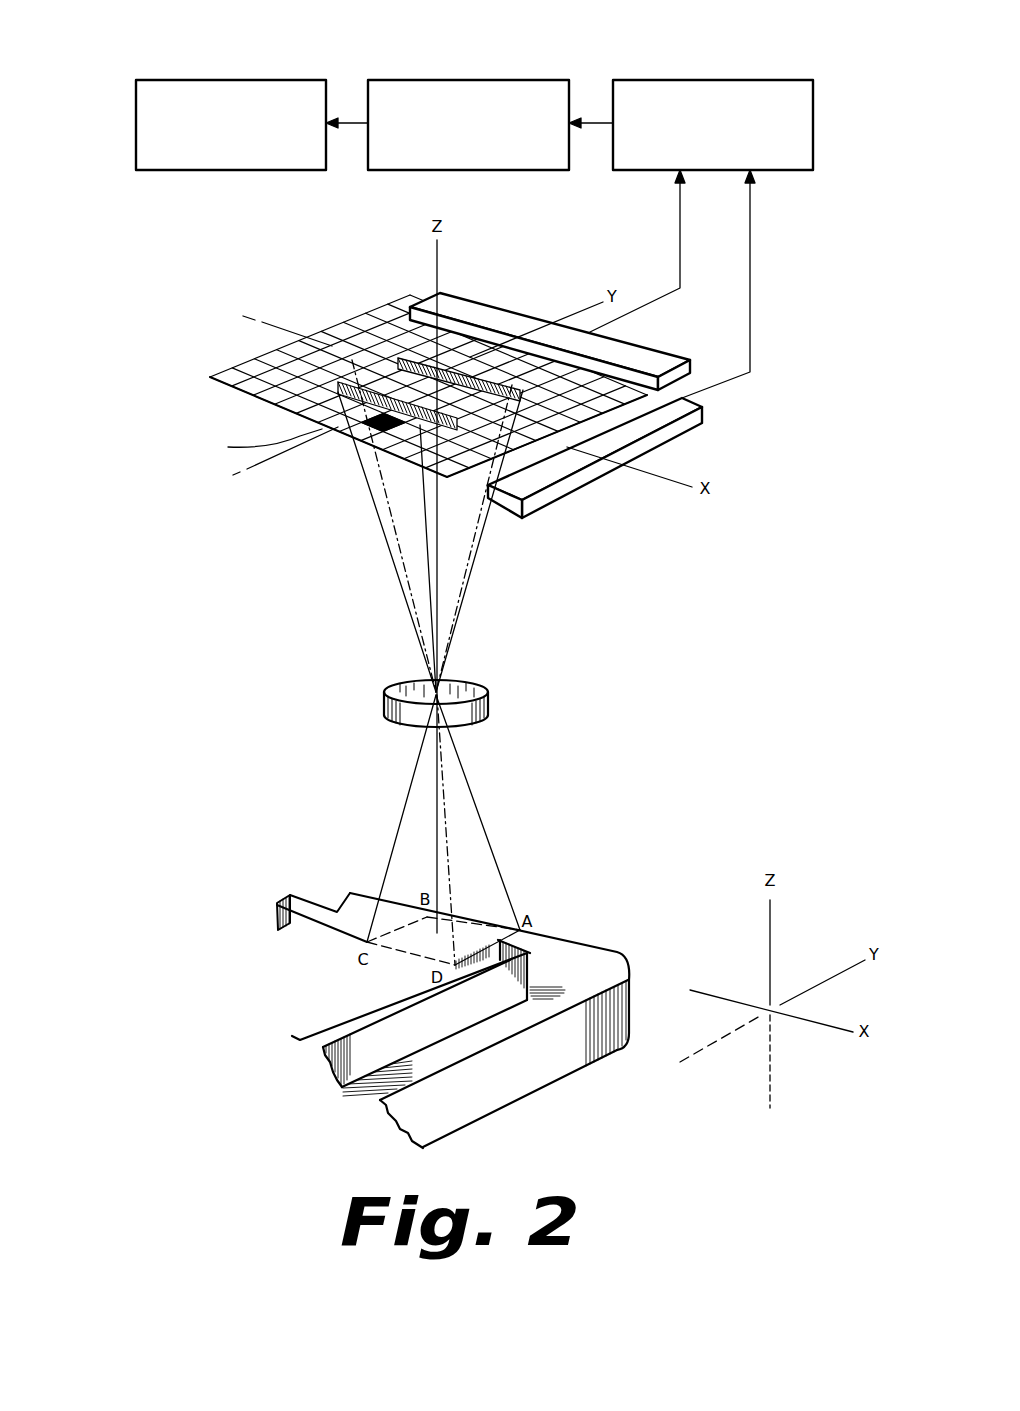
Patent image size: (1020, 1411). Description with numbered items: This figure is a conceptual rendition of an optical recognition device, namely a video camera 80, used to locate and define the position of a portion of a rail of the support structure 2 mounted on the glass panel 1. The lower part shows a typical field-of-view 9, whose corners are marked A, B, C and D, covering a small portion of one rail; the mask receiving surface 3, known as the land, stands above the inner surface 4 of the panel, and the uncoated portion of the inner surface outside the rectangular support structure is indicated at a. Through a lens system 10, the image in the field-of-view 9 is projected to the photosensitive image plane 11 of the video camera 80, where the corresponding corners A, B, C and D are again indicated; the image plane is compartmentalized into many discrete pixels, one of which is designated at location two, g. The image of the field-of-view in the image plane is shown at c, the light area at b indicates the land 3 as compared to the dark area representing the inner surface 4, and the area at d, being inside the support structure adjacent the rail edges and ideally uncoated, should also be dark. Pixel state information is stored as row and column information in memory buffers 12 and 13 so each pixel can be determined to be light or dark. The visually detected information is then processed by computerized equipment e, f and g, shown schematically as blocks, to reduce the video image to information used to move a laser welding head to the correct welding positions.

The panel 1 is at (557, 1048).
The support structure 2 is at (540, 965).
The mask receiving surface 3 is at (318, 905).
The inner surface 4 is at (348, 990).
The field-of-view 9 is at (478, 912).
The lens system 10 is at (490, 710).
The photosensitive image plane 11 is at (212, 377).
The memory buffer 12 is at (703, 413).
The memory buffer 13 is at (462, 298).
The video camera 80 is at (326, 470).
The uncoated portion of inner surface a is at (597, 970).
The light image area of land b is at (276, 321).
The image of field-of-view c is at (357, 378).
The image of inner surface inside support structure d is at (450, 372).
The position determination logic and interface e is at (690, 80).
The computer and XY table controller f is at (455, 80).
The laser positioning XY table g is at (213, 80).